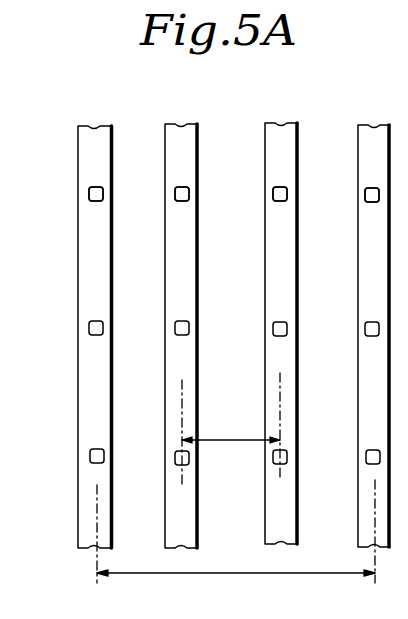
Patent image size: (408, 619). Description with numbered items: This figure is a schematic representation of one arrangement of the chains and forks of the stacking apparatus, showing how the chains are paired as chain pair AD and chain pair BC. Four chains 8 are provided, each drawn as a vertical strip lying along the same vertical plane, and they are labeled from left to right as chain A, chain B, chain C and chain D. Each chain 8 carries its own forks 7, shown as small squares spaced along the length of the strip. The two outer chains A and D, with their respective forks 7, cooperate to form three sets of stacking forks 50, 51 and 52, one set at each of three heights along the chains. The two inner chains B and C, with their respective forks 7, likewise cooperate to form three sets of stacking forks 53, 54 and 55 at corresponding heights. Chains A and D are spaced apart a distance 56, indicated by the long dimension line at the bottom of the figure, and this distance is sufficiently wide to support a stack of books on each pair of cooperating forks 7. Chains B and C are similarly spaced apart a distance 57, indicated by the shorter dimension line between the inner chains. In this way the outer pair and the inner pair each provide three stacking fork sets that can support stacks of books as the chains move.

The forks 7 is at (175, 194).
The chain 8 is at (165, 148).
The stacking fork set 50 is at (95, 201).
The stacking fork set 51 is at (103, 327).
The stacking fork set 52 is at (104, 460).
The stacking fork set 53 is at (277, 199).
The stacking fork set 54 is at (273, 327).
The stacking fork set 55 is at (273, 459).
The distance 56 is at (255, 573).
The distance 57 is at (243, 440).
The chain A is at (96, 126).
The chain B is at (184, 124).
The chain C is at (277, 123).
The chain D is at (371, 125).